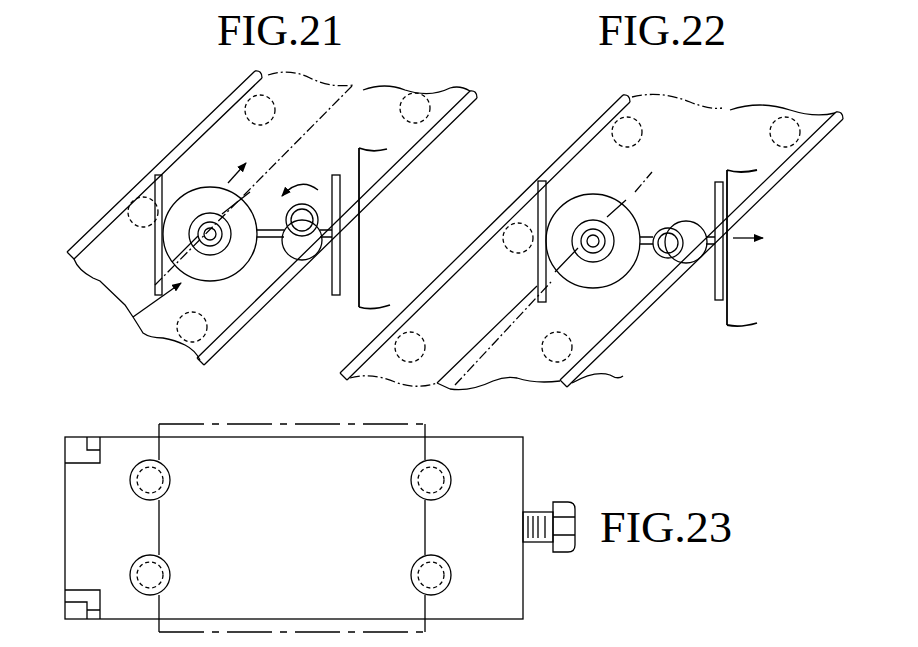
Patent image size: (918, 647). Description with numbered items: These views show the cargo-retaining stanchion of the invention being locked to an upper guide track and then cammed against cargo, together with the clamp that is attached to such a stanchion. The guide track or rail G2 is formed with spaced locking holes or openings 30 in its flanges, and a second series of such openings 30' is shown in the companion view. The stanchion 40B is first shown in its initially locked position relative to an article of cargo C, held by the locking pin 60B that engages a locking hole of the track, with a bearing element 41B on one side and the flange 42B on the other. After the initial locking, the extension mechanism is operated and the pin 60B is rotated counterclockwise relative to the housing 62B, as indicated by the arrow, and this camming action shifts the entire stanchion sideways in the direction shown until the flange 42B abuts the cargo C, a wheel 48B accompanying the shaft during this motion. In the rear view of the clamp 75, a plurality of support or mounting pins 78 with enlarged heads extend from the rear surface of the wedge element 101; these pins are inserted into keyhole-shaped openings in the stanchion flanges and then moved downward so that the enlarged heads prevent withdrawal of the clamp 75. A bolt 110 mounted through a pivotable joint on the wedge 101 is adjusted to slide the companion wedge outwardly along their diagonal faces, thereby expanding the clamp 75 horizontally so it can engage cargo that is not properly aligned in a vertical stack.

In FIG. 21, the locking holes 30 is at (171, 165).
In FIG. 22, the conveyor rail 30' is at (491, 254).
In FIG. 21, the stanchion 40B is at (141, 331).
In FIG. 21, the bearing plate 41B is at (150, 183).
In FIG. 22, the bearing plate 41B is at (537, 208).
In FIG. 21, the flange 42B is at (337, 295).
In FIG. 22, the flange 42B is at (720, 302).
In FIG. 21, the wheel 48B is at (230, 272).
In FIG. 21, the locking pin 60B is at (318, 218).
In FIG. 22, the locking pin 60B is at (657, 265).
In FIG. 21, the housing 62B is at (297, 258).
In FIG. 22, the housing 62B is at (690, 222).
In FIG. 21, the guide track G2 is at (93, 280).
In FIG. 22, the guide track G2 is at (592, 246).
In FIG. 21, the cargo C is at (375, 228).
In FIG. 22, the cargo C is at (745, 248).
In FIG. 23, the clamp 75 is at (135, 418).
In FIG. 23, the support pins 78 is at (160, 478).
In FIG. 23, the wedge element 101 is at (517, 600).
In FIG. 23, the bolt 110 is at (560, 510).